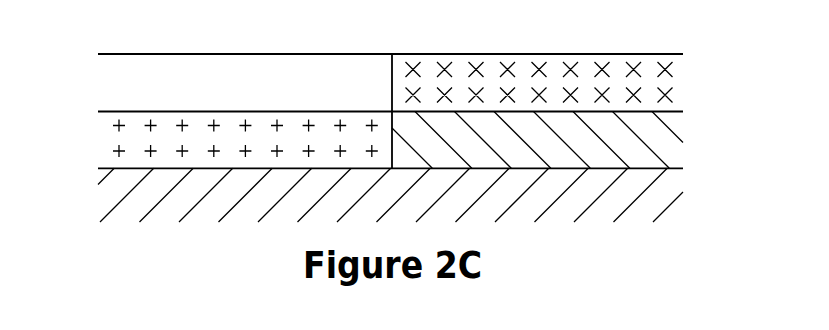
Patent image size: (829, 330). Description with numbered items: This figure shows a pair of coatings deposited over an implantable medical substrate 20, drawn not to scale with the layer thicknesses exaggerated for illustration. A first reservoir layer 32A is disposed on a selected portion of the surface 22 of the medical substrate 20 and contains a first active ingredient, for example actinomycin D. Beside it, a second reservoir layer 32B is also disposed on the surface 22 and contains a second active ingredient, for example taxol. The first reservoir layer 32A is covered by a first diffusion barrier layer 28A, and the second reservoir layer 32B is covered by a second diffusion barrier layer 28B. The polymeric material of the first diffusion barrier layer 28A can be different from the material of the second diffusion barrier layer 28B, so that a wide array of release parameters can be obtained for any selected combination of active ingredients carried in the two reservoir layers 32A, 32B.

The medical substrate 20 is at (622, 195).
The surface 22 is at (117, 168).
The first diffusion barrier layer 28A is at (157, 83).
The second diffusion barrier layer 28B is at (643, 87).
The first reservoir layer 32A is at (140, 140).
The second reservoir layer 32B is at (613, 132).